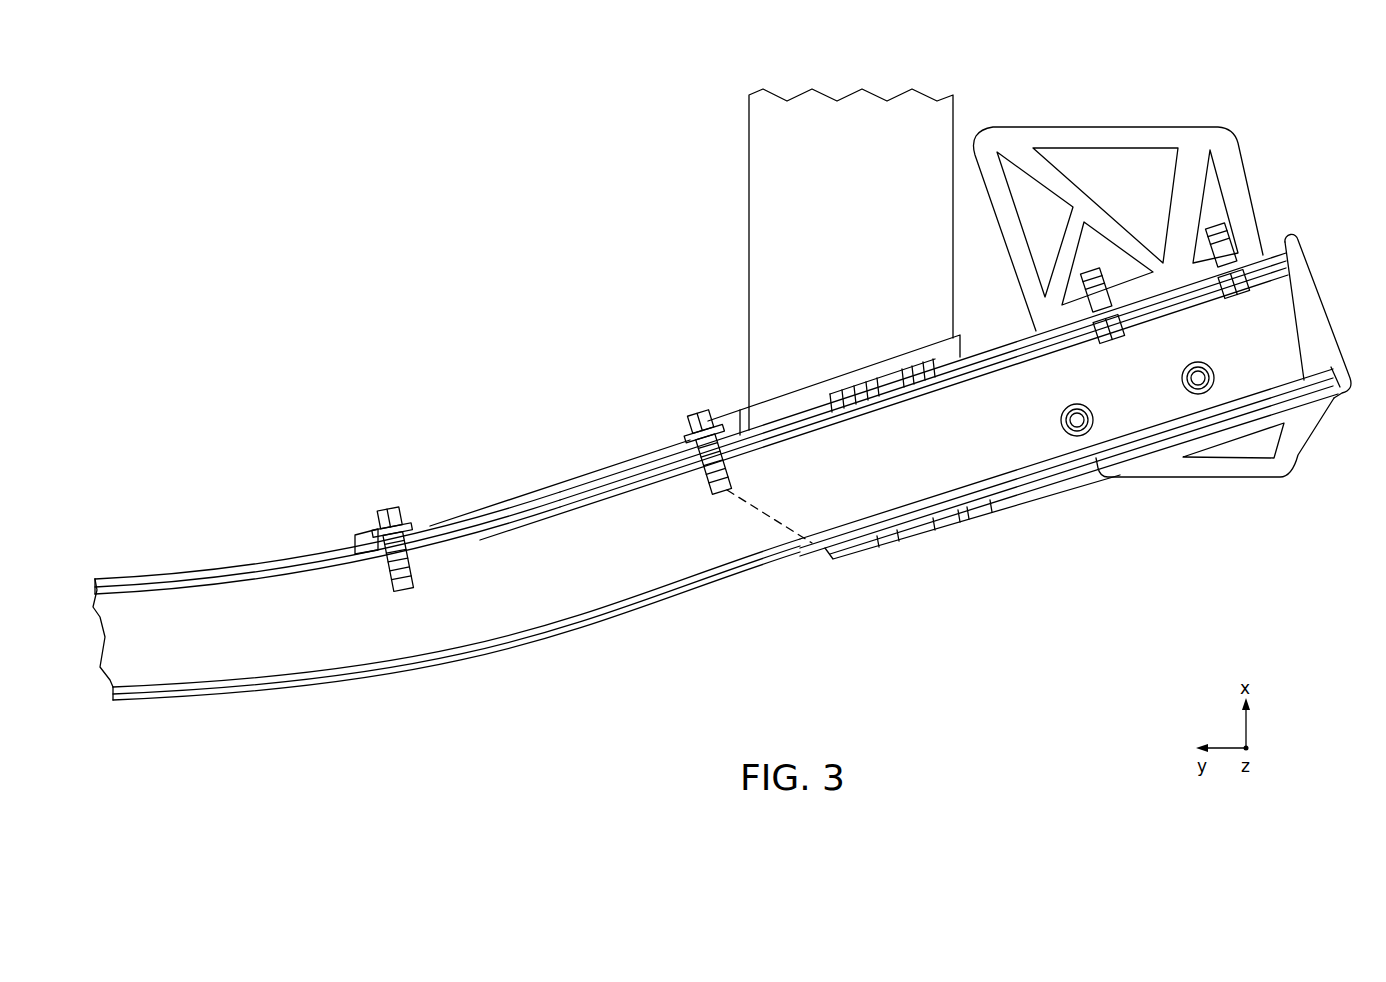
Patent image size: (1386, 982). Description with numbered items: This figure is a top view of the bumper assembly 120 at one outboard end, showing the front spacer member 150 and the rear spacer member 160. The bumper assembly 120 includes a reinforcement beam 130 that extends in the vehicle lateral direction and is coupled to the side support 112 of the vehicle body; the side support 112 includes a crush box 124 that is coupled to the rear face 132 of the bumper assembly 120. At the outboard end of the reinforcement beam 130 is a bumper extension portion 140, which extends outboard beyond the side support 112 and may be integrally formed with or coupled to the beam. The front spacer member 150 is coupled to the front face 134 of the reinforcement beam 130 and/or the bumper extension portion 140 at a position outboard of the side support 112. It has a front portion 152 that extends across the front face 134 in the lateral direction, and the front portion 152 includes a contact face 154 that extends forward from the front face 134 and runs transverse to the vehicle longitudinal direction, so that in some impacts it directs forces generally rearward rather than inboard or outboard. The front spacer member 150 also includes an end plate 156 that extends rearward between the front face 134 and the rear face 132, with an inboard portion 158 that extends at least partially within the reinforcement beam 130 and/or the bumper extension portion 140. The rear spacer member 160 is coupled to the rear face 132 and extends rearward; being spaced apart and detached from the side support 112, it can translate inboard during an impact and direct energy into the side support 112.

The side support 112 is at (713, 236).
The bumper assembly 120 is at (326, 722).
The crush box 124 is at (722, 382).
The reinforcement beam 130 is at (398, 703).
The rear face 132 is at (304, 568).
The front face 134 is at (512, 641).
The bumper extension portion 140 is at (1050, 522).
The front spacer member 150 is at (1312, 457).
The front portion 152 is at (1195, 497).
The contact face 154 is at (1241, 479).
The end plate 156 is at (1338, 292).
The inboard portion 158 is at (1291, 333).
The rear spacer member 160 is at (1240, 113).